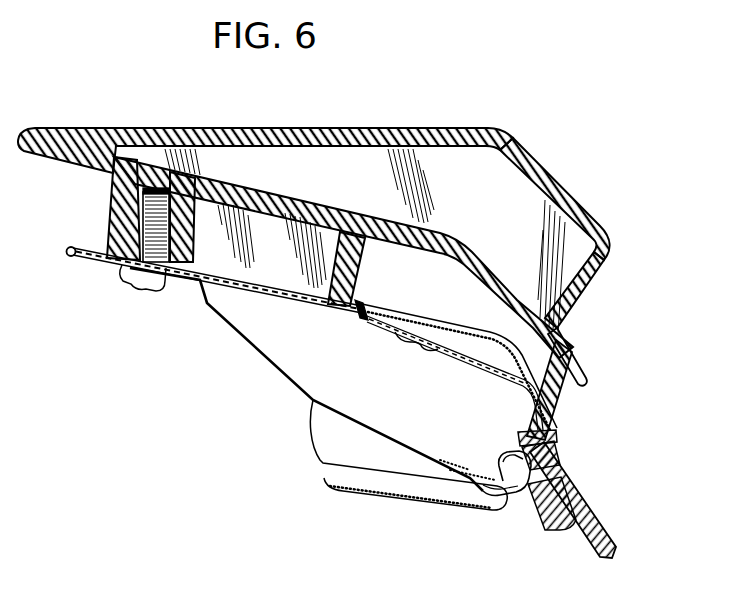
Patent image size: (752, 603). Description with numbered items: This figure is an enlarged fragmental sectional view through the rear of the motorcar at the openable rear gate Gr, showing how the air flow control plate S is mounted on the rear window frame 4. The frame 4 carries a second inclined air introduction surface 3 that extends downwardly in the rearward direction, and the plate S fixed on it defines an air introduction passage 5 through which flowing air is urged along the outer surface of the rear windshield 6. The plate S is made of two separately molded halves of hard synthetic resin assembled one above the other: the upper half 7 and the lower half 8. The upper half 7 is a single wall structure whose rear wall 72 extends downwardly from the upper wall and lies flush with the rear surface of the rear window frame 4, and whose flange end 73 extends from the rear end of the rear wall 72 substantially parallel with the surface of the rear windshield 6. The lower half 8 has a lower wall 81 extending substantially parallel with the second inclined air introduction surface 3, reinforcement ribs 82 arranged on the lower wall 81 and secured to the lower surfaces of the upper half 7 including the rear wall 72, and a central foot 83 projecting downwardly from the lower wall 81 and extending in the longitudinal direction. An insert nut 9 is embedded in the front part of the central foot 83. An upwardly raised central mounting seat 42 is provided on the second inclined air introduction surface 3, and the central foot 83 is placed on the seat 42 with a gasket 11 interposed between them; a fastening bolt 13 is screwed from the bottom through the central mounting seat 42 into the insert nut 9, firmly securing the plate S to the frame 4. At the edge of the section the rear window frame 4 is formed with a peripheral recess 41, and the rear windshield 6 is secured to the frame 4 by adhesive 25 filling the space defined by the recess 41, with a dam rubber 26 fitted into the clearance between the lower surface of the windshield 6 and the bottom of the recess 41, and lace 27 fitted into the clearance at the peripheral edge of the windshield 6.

The air flow control plate S is at (325, 227).
The upper half 7 is at (390, 127).
The lower half 8 is at (107, 222).
The insert nut 9 is at (172, 228).
The fastening bolt 13 is at (133, 280).
The gasket 11 is at (268, 280).
The rear gate Gr is at (206, 320).
The central foot 83 is at (357, 263).
The lower wall 81 is at (430, 236).
The air introduction passage 5 is at (316, 294).
The reinforcement rib 82 is at (560, 213).
The rear wall 72 is at (590, 285).
The flange end 73 is at (582, 368).
The central mounting seat 42 is at (360, 318).
The second inclined air introduction surface 3 is at (380, 322).
The lace 27 is at (556, 438).
The adhesive 25 is at (557, 458).
The dam rubber 26 is at (573, 489).
The rear windshield 6 is at (604, 524).
The peripheral recess 41 is at (511, 461).
The rear window frame 4 is at (504, 504).